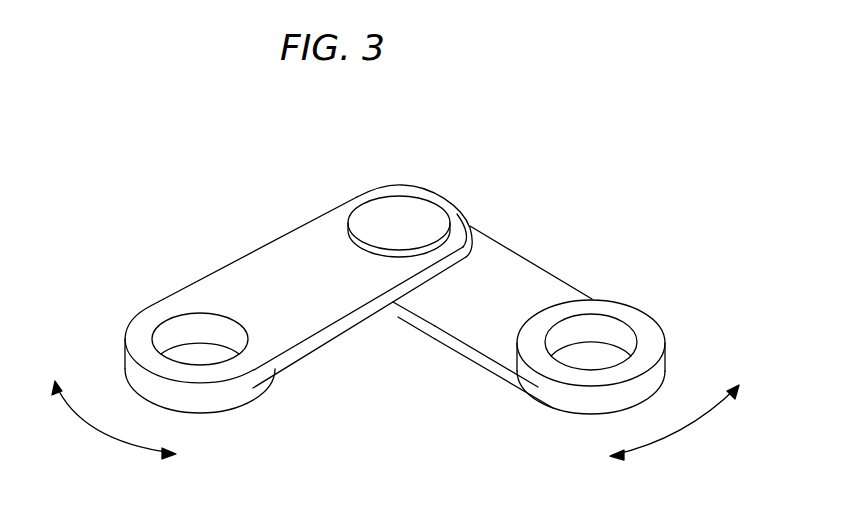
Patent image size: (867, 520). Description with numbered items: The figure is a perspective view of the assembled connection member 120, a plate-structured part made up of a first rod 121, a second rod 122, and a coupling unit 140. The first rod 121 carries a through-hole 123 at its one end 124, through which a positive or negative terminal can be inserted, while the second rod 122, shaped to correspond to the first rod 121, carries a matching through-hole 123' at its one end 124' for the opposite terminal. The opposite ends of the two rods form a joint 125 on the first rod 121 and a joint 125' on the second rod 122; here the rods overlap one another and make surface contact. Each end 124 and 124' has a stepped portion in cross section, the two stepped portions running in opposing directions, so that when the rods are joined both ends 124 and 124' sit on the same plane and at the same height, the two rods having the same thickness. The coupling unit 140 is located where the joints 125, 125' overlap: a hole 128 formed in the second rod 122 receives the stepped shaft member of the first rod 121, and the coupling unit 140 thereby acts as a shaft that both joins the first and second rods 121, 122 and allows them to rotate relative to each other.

The connection member 120 is at (150, 157).
The first rod 121 is at (512, 274).
The second rod 122 is at (270, 267).
The through-hole 123 is at (609, 339).
The through-hole 123' is at (203, 393).
The end of first rod 124 is at (572, 377).
The end of second rod 124' is at (161, 359).
The joint 125 is at (410, 323).
The joint 125' is at (438, 204).
The hole 128 is at (375, 215).
The coupling unit 140 is at (400, 180).